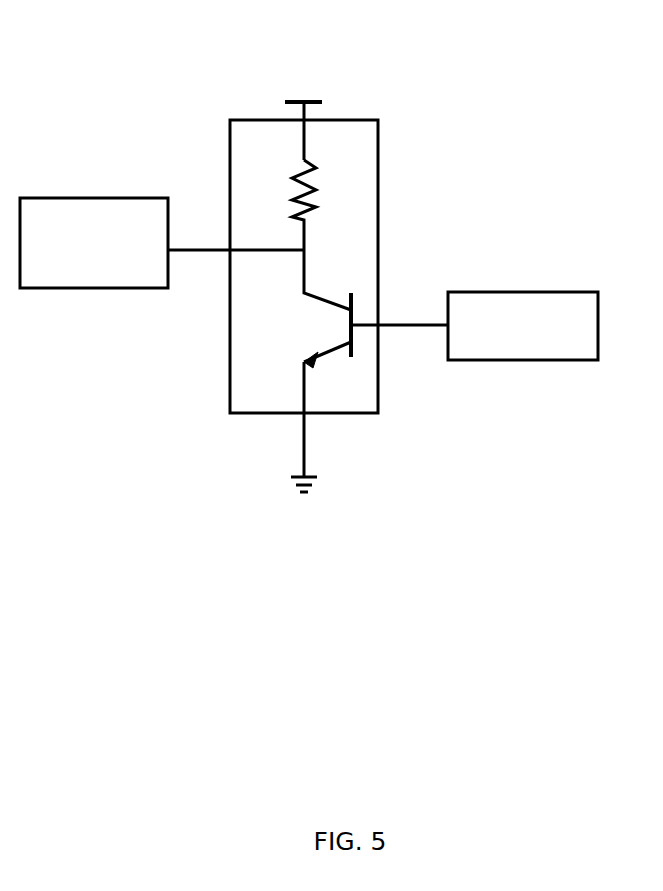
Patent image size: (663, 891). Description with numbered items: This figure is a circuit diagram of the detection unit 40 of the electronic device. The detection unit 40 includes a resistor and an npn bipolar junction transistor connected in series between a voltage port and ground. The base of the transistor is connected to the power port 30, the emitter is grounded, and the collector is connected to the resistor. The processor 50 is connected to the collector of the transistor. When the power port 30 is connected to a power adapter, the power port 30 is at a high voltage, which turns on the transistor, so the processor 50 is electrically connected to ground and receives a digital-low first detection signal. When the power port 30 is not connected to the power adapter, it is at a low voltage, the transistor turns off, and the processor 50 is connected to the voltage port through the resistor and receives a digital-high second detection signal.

The processor 50 is at (78, 198).
The detection unit 40 is at (380, 193).
The power port 30 is at (512, 292).